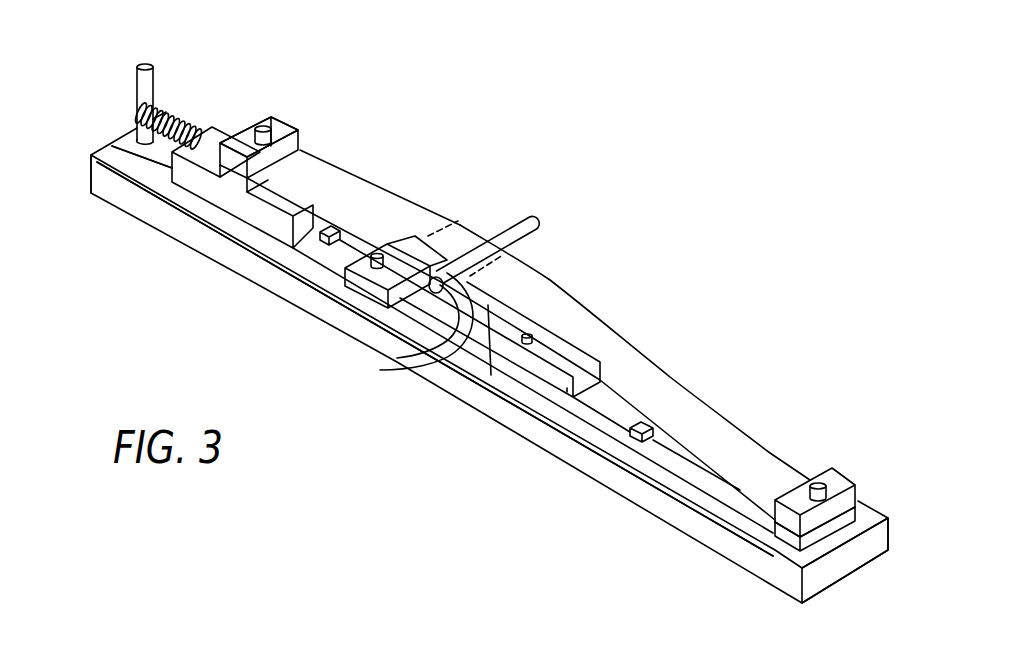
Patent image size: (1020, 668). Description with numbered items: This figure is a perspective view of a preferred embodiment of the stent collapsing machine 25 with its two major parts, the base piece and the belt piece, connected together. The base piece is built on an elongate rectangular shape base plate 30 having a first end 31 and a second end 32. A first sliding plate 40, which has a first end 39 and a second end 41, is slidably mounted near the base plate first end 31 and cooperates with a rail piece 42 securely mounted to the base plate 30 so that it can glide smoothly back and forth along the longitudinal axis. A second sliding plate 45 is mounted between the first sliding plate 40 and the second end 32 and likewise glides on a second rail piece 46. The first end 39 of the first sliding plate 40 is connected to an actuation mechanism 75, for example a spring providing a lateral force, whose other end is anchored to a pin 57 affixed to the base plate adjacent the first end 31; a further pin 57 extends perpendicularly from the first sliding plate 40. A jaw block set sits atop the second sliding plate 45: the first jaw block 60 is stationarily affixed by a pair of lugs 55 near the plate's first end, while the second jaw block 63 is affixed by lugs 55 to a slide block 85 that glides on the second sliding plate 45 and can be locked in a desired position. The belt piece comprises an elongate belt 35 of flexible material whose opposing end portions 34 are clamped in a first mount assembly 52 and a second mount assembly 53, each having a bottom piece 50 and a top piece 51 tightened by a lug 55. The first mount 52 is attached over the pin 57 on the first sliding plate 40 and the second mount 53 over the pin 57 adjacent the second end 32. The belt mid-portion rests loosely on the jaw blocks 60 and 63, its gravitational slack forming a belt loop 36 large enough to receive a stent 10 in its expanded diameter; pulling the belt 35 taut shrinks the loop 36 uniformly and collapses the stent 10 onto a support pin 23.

The stent 10 is at (397, 362).
The support pin 23 is at (527, 238).
The stent collapsing machine 25 is at (666, 101).
The elongate rectangular shape base plate 30 is at (253, 263).
The first end of base plate 31 is at (113, 145).
The second end of base plate 32 is at (853, 562).
The belt end portions 34 is at (305, 173).
The elongate belt 35 is at (670, 382).
The belt loop 36 is at (440, 357).
The first end of first sliding plate 39 is at (157, 165).
The first sliding plate 40 is at (228, 197).
The second end of first sliding plate 41 is at (305, 266).
The rail piece 42 is at (321, 246).
The second sliding plate 45 is at (497, 365).
The second rail piece 46 is at (600, 438).
The mount bottom piece 50 is at (230, 177).
The mount top piece 51 is at (300, 148).
The first mount assembly 52 is at (293, 130).
The second mount assembly 53 is at (788, 531).
The lug 55 is at (263, 128).
The pin 57 is at (152, 88).
The first jaw block 60 is at (405, 290).
The second jaw block 63 is at (493, 368).
The actuation mechanism 75 is at (185, 117).
The slide block 85 is at (567, 390).